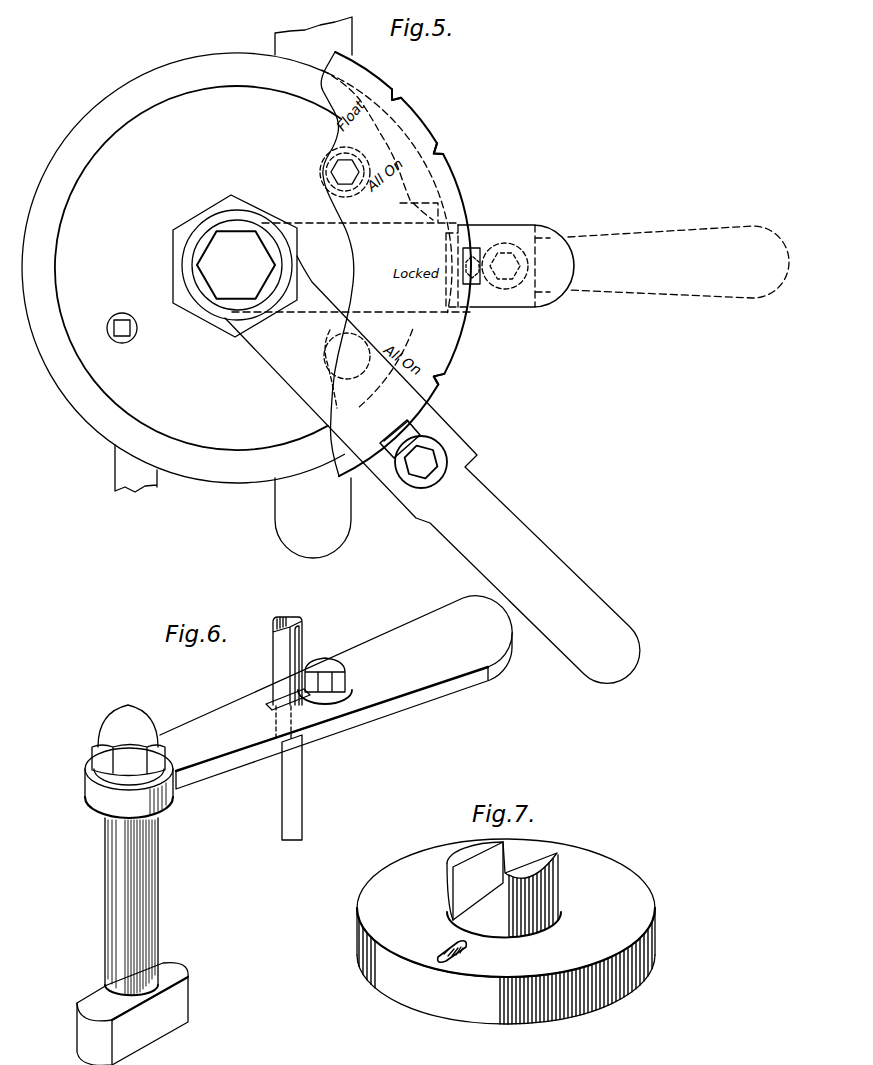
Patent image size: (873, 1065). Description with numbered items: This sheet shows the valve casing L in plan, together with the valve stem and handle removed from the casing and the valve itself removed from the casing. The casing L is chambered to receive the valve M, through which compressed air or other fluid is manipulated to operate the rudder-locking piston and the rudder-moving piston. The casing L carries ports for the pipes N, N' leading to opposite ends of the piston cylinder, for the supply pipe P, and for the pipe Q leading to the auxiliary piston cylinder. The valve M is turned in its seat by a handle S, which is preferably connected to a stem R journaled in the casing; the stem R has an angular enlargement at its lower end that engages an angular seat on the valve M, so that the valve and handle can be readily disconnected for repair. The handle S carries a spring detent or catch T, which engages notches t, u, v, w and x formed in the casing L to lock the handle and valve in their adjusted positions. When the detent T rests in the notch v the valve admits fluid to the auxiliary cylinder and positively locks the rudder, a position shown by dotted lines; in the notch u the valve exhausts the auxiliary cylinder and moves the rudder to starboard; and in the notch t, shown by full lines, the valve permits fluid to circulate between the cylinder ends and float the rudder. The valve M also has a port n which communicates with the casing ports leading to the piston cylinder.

In FIG. 5, the valve casing L is at (237, 268).
In FIG. 5, the pipe N' is at (313, 36).
In FIG. 5, the pipe N is at (313, 518).
In FIG. 5, the pipe Q is at (157, 486).
In FIG. 5, the notch x is at (401, 98).
In FIG. 5, the notch w is at (444, 152).
In FIG. 5, the notch u is at (441, 384).
In FIG. 5, the notch v is at (471, 262).
In FIG. 5, the supply pipe P is at (555, 250).
In FIG. 5, the handle S is at (432, 469).
In FIG. 6, the handle S is at (394, 692).
In FIG. 5, the notch t is at (395, 437).
In FIG. 6, the spring detent T is at (302, 772).
In FIG. 6, the stem R is at (152, 858).
In FIG. 7, the valve M is at (506, 931).
In FIG. 7, the port n is at (437, 948).